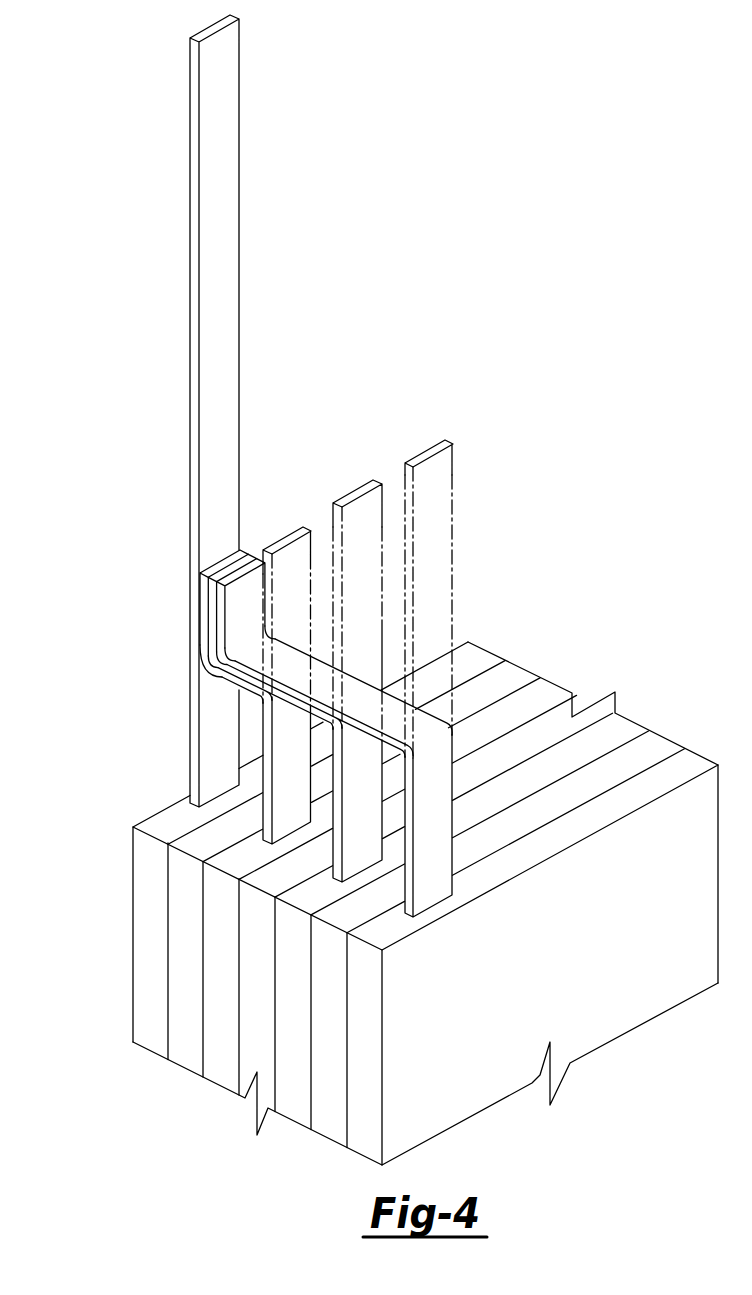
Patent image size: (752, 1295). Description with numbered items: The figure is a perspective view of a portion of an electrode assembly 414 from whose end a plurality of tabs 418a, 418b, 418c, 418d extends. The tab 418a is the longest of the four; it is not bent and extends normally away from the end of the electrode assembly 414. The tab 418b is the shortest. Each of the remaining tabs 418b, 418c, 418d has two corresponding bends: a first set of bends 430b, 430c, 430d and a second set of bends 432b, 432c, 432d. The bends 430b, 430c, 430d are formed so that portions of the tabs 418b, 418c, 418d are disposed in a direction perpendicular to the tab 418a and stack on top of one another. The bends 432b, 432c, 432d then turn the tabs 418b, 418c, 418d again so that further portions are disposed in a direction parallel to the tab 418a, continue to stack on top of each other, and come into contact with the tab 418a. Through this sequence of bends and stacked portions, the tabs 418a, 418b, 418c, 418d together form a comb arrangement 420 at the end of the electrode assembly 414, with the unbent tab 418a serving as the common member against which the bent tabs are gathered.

The electrode assembly 414 is at (72, 524).
The tab 418a is at (220, 177).
The tab 418b is at (283, 768).
The tab 418c is at (360, 838).
The tab 418d is at (430, 875).
The comb arrangement 420 is at (303, 963).
The bend 430b is at (262, 704).
The bend 430c is at (333, 727).
The bend 430d is at (402, 756).
The bend 432b is at (203, 672).
The bend 432c is at (212, 664).
The bend 432d is at (218, 655).